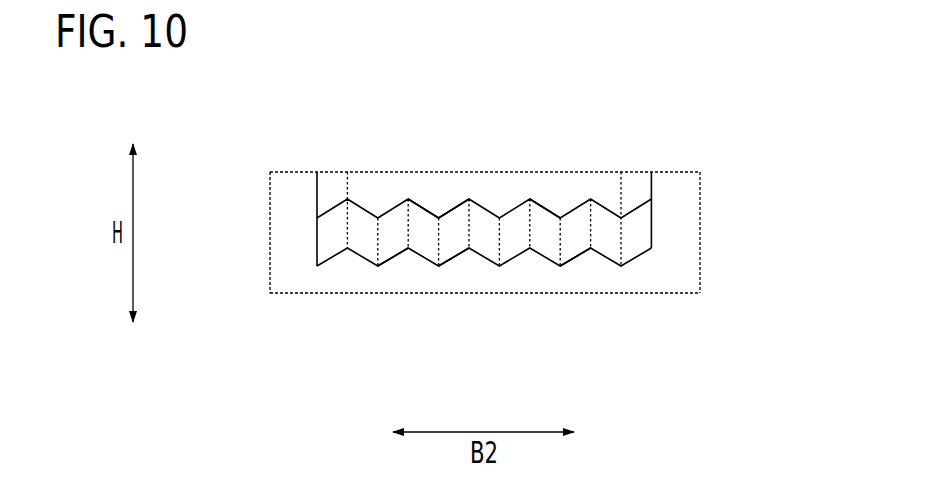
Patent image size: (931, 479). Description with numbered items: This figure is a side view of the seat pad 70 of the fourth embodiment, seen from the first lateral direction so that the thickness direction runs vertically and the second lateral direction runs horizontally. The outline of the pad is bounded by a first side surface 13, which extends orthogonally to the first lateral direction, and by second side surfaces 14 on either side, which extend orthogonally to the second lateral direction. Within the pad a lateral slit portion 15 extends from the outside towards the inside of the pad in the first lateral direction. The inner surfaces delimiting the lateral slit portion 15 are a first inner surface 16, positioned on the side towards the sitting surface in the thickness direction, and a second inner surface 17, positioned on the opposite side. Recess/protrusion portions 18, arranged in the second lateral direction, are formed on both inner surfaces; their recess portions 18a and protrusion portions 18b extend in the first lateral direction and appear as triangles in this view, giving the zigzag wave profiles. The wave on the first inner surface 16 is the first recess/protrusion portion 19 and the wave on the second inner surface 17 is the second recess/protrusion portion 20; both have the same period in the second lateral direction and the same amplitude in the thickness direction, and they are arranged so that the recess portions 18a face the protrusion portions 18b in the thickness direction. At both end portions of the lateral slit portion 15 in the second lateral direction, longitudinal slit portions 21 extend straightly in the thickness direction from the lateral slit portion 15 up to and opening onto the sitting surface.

The seat pad 70 is at (707, 123).
The first side surface 13 is at (683, 215).
The second side surface 14 is at (270, 245).
The lateral slit portion 15 is at (327, 236).
The first inner surface 16 is at (550, 208).
The second inner surface 17 is at (581, 254).
The recess/protrusion portion 18 is at (495, 97).
The recess portion 18a is at (409, 205).
The protrusion portion 18b is at (439, 218).
The first recess/protrusion portion 19 is at (484, 208).
The second recess/protrusion portion 20 is at (484, 257).
The longitudinal slit portion 21 is at (332, 173).